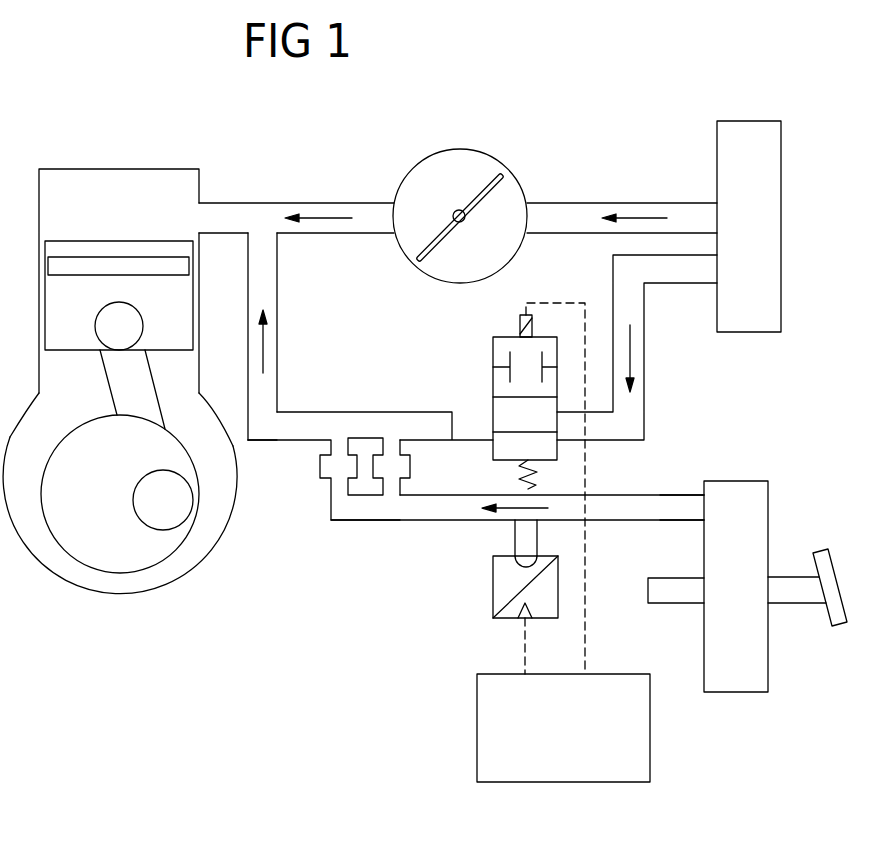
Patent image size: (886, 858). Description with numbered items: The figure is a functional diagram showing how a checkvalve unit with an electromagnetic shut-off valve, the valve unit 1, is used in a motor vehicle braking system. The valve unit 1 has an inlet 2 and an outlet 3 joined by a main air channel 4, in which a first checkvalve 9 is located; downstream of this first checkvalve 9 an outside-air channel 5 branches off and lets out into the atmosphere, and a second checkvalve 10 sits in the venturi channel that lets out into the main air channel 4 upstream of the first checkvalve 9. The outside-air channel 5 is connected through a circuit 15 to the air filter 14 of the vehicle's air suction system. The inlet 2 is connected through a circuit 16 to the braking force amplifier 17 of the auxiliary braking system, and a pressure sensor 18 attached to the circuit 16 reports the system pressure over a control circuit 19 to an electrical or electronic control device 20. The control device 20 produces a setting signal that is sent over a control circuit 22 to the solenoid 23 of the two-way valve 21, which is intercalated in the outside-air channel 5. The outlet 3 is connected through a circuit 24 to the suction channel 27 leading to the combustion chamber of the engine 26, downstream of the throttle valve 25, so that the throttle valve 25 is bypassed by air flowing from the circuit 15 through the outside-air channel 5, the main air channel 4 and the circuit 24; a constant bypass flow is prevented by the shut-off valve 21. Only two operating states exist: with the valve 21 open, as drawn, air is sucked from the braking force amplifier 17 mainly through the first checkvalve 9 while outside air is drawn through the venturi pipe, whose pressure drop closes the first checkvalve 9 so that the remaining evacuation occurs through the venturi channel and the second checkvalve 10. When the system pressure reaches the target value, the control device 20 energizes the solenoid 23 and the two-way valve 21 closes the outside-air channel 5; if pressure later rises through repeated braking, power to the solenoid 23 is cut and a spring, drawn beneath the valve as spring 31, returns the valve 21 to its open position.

The valve unit 1 is at (383, 543).
The inlet 2 is at (451, 497).
The outlet 3 is at (277, 440).
The main air channel 4 is at (318, 427).
The outside-air channel 5 is at (420, 425).
The first checkvalve 9 is at (343, 462).
The second checkvalve 10 is at (397, 465).
The air filter 14 is at (770, 236).
The circuit 15 is at (637, 375).
The circuit 16 is at (662, 510).
The braking force amplifier 17 is at (760, 513).
The pressure sensor 18 is at (500, 594).
The control circuit 19 is at (525, 643).
The control device 20 is at (637, 748).
The two-way valve 21 is at (492, 376).
The control circuit 22 is at (585, 637).
The solenoid 23 is at (518, 323).
The circuit 24 is at (278, 268).
The throttle valve 25 is at (455, 148).
The engine 26 is at (115, 169).
The suction channel 27 is at (247, 213).
The spring 31 is at (535, 478).